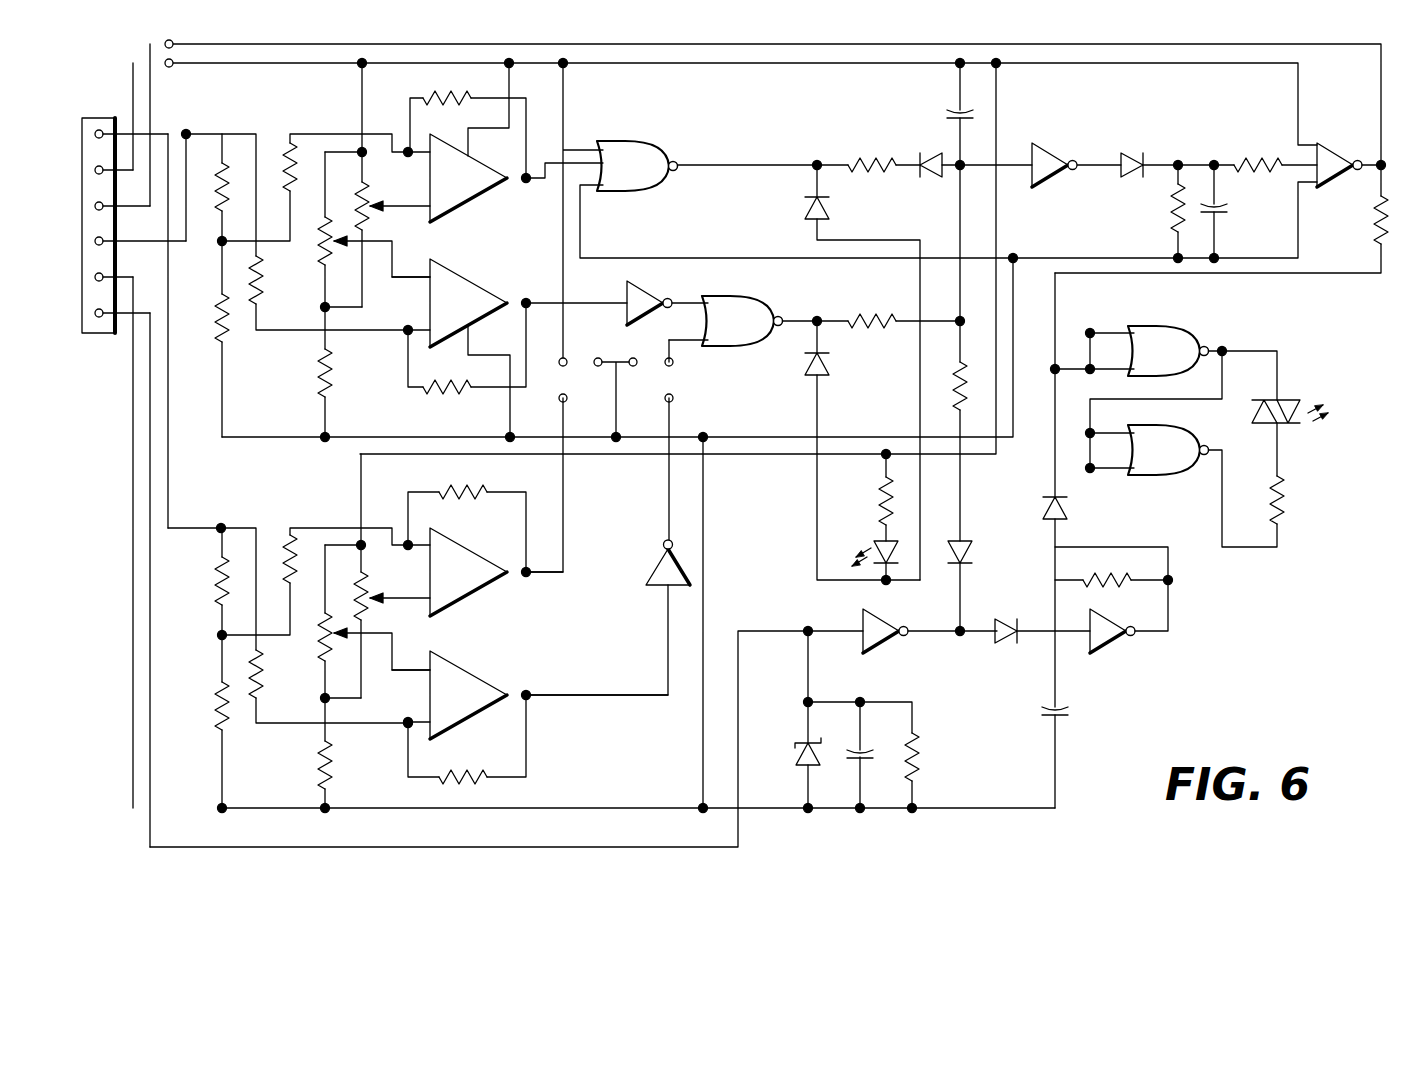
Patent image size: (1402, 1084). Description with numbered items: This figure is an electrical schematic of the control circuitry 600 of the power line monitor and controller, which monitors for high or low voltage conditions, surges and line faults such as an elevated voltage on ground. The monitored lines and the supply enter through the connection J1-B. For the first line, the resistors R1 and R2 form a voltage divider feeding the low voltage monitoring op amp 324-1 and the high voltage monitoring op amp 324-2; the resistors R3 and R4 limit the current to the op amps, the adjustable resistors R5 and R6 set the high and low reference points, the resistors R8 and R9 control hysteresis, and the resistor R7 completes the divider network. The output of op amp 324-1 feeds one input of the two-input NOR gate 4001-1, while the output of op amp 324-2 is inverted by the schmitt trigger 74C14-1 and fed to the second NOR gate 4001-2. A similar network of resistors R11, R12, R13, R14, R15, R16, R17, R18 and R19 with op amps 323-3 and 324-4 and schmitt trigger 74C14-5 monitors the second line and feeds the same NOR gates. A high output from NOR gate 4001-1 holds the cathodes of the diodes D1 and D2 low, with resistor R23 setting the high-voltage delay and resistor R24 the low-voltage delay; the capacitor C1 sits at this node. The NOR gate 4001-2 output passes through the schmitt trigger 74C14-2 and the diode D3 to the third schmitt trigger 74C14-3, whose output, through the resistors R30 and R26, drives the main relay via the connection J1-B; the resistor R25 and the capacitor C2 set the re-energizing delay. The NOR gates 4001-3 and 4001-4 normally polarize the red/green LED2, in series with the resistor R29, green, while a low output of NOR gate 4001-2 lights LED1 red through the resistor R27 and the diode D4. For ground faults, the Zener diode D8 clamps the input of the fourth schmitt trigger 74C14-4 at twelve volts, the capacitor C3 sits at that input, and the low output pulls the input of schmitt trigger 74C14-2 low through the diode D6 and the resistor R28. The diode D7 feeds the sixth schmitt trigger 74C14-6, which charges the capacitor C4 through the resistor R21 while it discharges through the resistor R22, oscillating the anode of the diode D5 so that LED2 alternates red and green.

The control circuitry 600 is at (729, 461).
The connection J1-B is at (128, 212).
The resistor R1 is at (209, 187).
The resistor R2 is at (206, 339).
The resistor R3 is at (272, 286).
The resistor R4 is at (290, 150).
The adjustable resistor R5 is at (377, 185).
The adjustable resistor R6 is at (358, 229).
The resistor R7 is at (307, 372).
The resistor R8 is at (461, 125).
The resistor R9 is at (467, 364).
The resistor R11 is at (203, 581).
The resistor R12 is at (201, 721).
The resistor R13 is at (278, 677).
The resistor R14 is at (290, 542).
The adjustable resistor R15 is at (377, 576).
The adjustable resistor R16 is at (352, 621).
The resistor R17 is at (302, 753).
The resistor R18 is at (467, 517).
The resistor R19 is at (467, 739).
The resistor R21 is at (1110, 567).
The resistor R22 is at (938, 757).
The resistor R23 is at (868, 150).
The resistor R24 is at (888, 305).
The resistor R25 is at (1156, 211).
The resistor R26 is at (1359, 220).
The resistor R27 is at (863, 497).
The resistor R28 is at (948, 378).
The resistor R29 is at (1300, 475).
The resistor R30 is at (1247, 147).
The capacitor C1 is at (945, 114).
The capacitor C2 is at (1231, 211).
The capacitor C3 is at (850, 740).
The capacitor C4 is at (1073, 705).
The diode D1 is at (847, 372).
The diode D2 is at (940, 180).
The diode D3 is at (1146, 150).
The diode D4 is at (847, 450).
The diode D5 is at (1038, 510).
The diode D6 is at (979, 584).
The diode D7 is at (1042, 616).
The Zener diode D8 is at (788, 753).
The LED LED1 is at (859, 549).
The red/green LED LED2 is at (1273, 390).
The low voltage monitoring op amp 324-1 is at (504, 150).
The high voltage monitoring op amp 324-2 is at (509, 347).
The op amp 323-3 is at (484, 578).
The op amp 324-4 is at (530, 693).
The two-input NOR logic gate 4001-1 is at (688, 214).
The second two-input NOR logic gate 4001-2 is at (777, 322).
The two-input NOR logic gate 4001-3 is at (1182, 348).
The fourth two-input NOR logic gate 4001-4 is at (1191, 486).
The schmitt trigger IC 74C14-1 is at (650, 296).
The schmitt trigger IC 74C14-2 is at (1040, 152).
The third schmitt trigger 74C14-3 is at (1330, 142).
The fourth schmitt trigger 74C14-4 is at (881, 624).
The schmitt trigger 74C14-5 is at (608, 617).
The sixth schmitt trigger 74C14-6 is at (1148, 625).